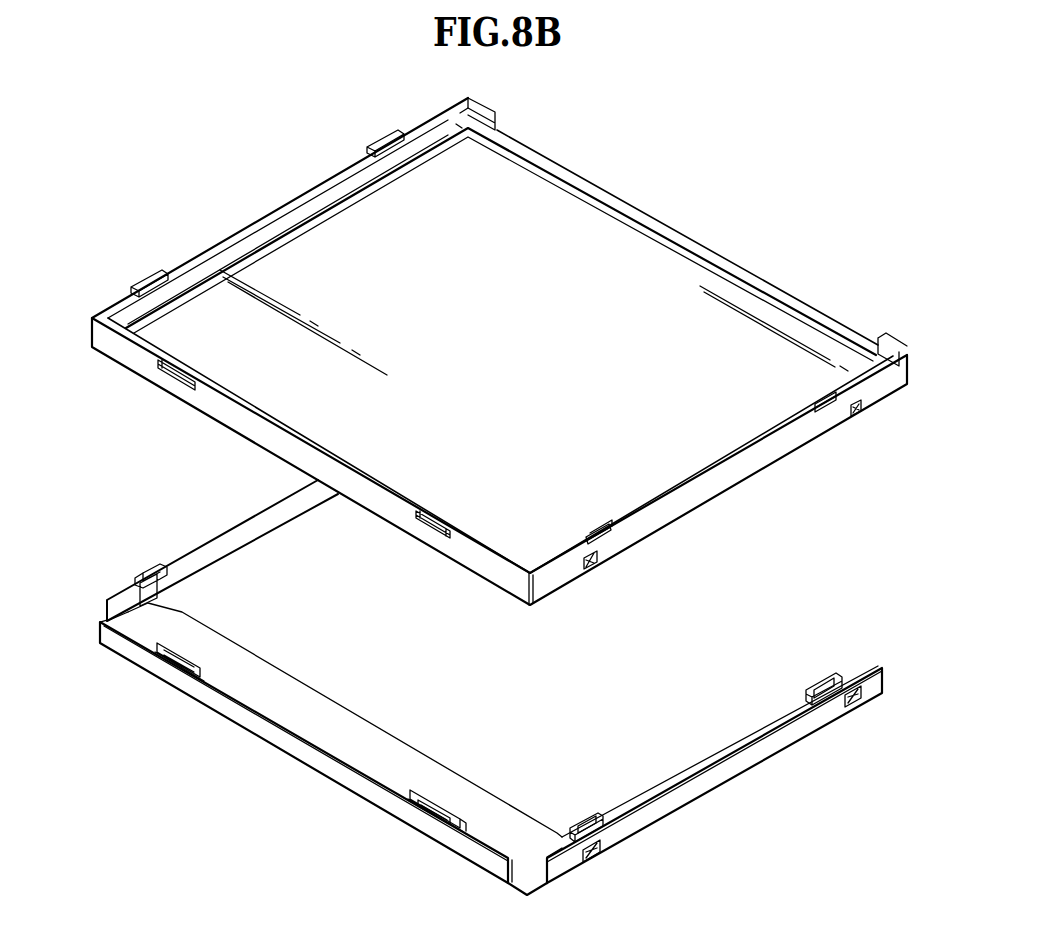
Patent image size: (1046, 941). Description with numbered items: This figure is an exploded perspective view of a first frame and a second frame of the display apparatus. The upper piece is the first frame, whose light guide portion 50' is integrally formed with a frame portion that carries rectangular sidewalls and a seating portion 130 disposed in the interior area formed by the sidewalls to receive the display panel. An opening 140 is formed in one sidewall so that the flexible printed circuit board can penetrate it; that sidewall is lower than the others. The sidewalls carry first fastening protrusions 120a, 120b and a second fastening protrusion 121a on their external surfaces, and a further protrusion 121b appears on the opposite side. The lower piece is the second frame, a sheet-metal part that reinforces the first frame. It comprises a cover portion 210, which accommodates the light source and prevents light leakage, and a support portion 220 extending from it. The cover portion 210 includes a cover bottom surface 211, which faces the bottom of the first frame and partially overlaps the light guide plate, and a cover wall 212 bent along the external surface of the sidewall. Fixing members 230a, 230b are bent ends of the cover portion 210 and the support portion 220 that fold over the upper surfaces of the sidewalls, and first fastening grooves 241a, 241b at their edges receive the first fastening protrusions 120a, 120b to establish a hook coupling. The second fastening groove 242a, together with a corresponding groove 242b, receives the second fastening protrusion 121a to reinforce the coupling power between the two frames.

The light guide portion 50' is at (499, 351).
The seating portion 130 is at (500, 133).
The opening 140 is at (860, 338).
The coupling hole 121b is at (856, 414).
The first fastening protrusion 120a is at (432, 525).
The first fastening protrusion 120b is at (588, 533).
The second fastening protrusion 121a is at (597, 559).
The fixing member 230b is at (600, 528).
The first fastening groove 241b is at (582, 826).
The second fastening groove 242a is at (594, 852).
The hook hole 242b is at (856, 702).
The support portion 220 is at (648, 524).
The cover wall 212 is at (463, 555).
The cover bottom surface 211 is at (392, 783).
The cover portion 210 is at (324, 824).
The fixing member 230a is at (422, 790).
The first fastening groove 241a is at (436, 803).